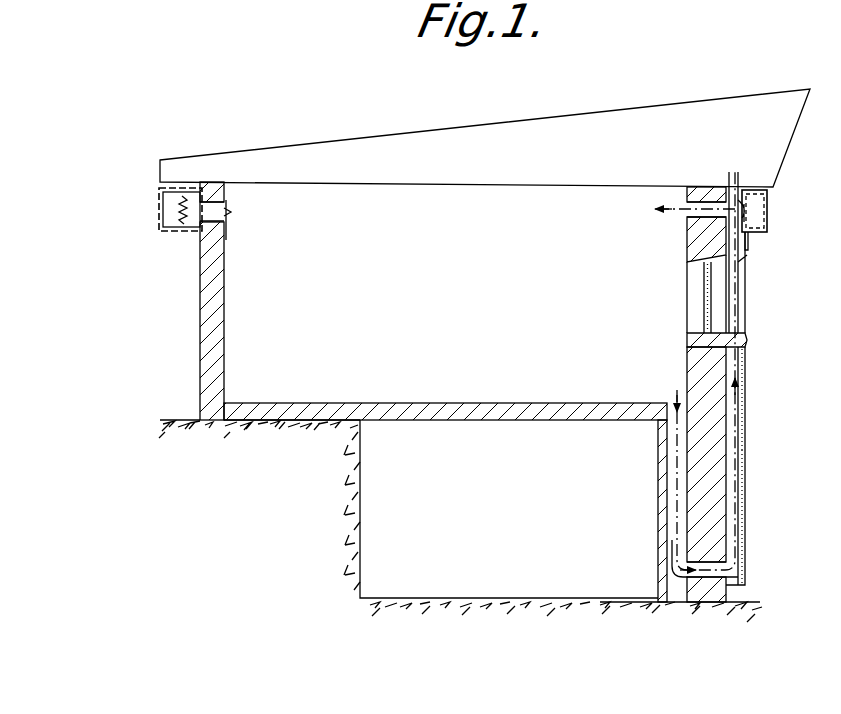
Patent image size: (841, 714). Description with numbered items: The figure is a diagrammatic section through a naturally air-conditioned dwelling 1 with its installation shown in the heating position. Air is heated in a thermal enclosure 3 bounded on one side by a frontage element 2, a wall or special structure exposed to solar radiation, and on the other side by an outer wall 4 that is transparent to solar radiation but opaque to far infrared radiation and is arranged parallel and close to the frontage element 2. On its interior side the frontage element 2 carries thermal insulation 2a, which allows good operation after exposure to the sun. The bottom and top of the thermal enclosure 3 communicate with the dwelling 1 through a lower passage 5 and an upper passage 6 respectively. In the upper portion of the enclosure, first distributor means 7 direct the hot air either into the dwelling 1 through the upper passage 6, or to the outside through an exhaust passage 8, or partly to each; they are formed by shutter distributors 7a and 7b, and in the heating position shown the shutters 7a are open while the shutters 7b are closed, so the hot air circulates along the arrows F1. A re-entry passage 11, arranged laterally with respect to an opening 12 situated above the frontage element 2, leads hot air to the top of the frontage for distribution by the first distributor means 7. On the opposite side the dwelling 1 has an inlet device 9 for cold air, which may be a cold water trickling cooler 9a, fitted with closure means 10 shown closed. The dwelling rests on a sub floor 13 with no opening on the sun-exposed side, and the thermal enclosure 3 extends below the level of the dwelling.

The dwelling 1 is at (437, 307).
The frontage element 2 is at (700, 378).
The thermal insulation 2a is at (690, 340).
The thermal enclosure 3 is at (738, 363).
The outer wall 4 is at (745, 452).
The lower passage 5 is at (690, 563).
The upper passage 6 is at (712, 198).
The first distributor means 7 is at (782, 194).
The shutter distributor 7a is at (728, 217).
The shutter distributor 7b is at (747, 240).
The exhaust passage 8 is at (767, 216).
The inlet device for cold air 9 is at (173, 200).
The cold water trickling cooler 9a is at (181, 226).
The closure means 10 is at (230, 213).
The re-entry passage 11 is at (742, 262).
The opening 12 is at (704, 281).
The sub floor 13 is at (482, 519).
The arrows F1 is at (688, 207).